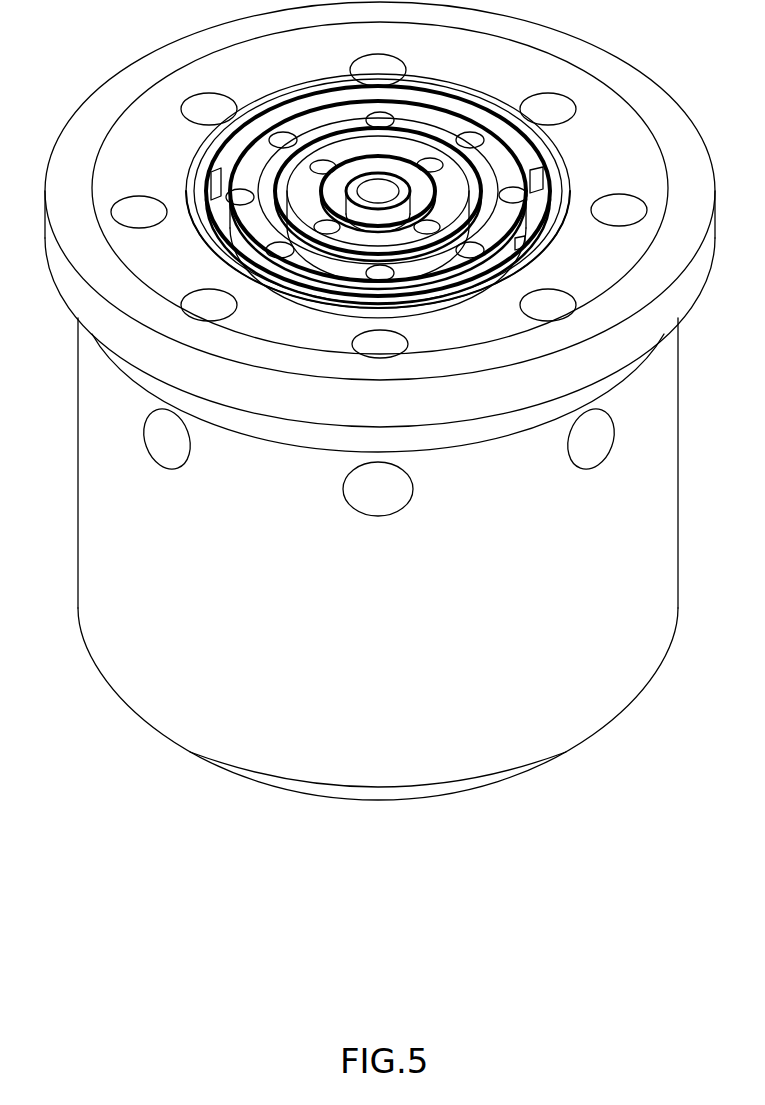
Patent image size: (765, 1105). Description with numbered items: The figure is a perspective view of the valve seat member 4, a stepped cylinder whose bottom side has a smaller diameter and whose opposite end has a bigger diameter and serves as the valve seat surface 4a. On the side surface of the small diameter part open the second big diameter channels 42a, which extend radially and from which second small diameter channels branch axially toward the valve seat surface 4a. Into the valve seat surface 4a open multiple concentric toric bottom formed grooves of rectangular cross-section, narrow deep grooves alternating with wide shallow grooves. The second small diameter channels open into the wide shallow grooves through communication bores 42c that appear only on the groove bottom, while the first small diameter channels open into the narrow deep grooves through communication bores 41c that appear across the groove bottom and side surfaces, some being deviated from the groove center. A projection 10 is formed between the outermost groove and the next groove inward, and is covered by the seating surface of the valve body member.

The valve seat member 4 is at (147, 772).
The valve seat surface 4a is at (284, 118).
The projection 10 is at (203, 222).
The communication bore 41c is at (212, 150).
The second big diameter channel 42a is at (390, 490).
The communication bore 42c is at (302, 318).